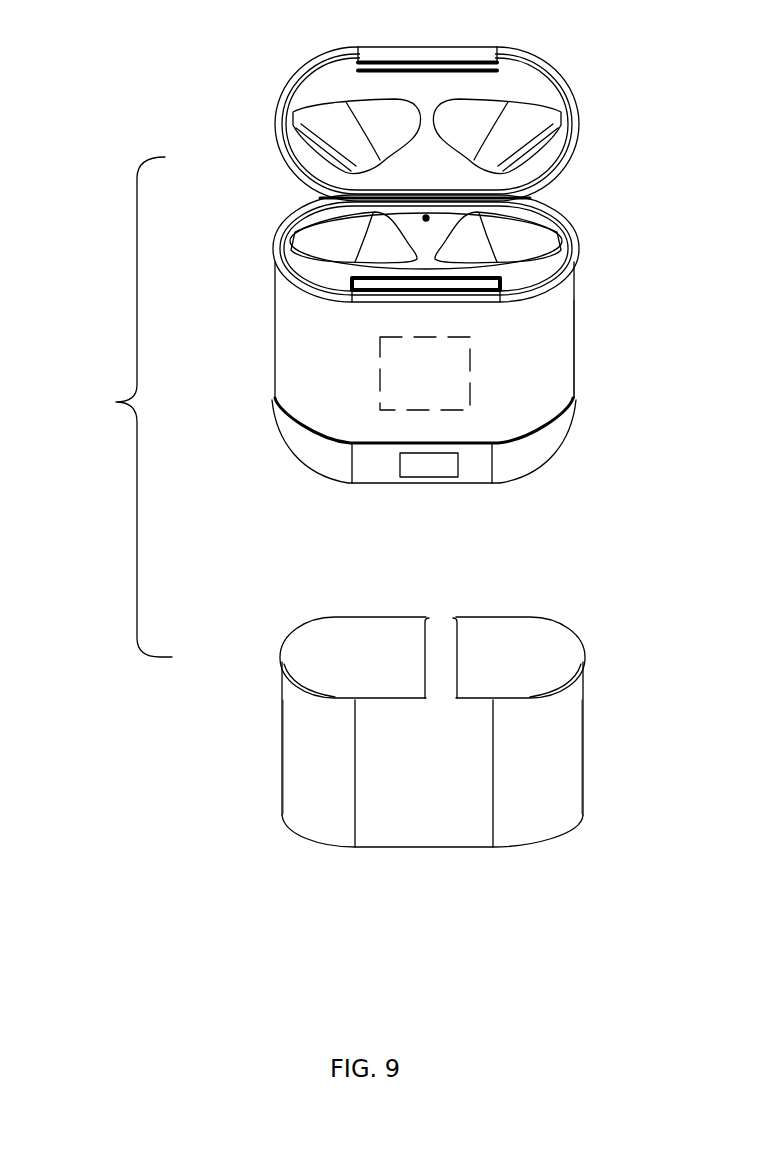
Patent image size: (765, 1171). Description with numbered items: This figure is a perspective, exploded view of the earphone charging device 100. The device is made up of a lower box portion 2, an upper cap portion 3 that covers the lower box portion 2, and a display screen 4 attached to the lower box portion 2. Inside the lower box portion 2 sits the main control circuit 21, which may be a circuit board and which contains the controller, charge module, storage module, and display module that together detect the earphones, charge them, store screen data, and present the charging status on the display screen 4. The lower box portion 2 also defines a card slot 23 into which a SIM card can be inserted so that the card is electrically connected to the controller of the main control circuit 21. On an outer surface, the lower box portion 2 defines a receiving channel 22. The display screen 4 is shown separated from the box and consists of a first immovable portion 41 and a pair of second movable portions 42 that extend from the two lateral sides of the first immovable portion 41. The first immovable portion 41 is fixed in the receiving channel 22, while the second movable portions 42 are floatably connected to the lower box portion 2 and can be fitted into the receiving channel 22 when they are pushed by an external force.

The earphone charging device 100 is at (110, 402).
The upper cap portion 3 is at (282, 112).
The lower box portion 2 is at (332, 455).
The receiving channel 22 is at (535, 345).
The main control circuit 21 is at (457, 397).
The card slot 23 is at (430, 470).
The display screen 4 is at (258, 715).
The first immovable portion 41 is at (457, 834).
The second movable portions 42 is at (308, 786).